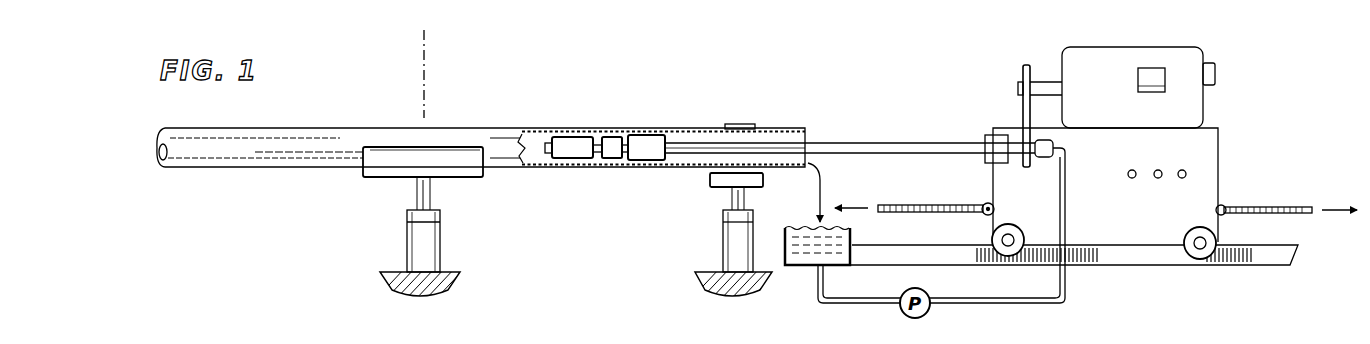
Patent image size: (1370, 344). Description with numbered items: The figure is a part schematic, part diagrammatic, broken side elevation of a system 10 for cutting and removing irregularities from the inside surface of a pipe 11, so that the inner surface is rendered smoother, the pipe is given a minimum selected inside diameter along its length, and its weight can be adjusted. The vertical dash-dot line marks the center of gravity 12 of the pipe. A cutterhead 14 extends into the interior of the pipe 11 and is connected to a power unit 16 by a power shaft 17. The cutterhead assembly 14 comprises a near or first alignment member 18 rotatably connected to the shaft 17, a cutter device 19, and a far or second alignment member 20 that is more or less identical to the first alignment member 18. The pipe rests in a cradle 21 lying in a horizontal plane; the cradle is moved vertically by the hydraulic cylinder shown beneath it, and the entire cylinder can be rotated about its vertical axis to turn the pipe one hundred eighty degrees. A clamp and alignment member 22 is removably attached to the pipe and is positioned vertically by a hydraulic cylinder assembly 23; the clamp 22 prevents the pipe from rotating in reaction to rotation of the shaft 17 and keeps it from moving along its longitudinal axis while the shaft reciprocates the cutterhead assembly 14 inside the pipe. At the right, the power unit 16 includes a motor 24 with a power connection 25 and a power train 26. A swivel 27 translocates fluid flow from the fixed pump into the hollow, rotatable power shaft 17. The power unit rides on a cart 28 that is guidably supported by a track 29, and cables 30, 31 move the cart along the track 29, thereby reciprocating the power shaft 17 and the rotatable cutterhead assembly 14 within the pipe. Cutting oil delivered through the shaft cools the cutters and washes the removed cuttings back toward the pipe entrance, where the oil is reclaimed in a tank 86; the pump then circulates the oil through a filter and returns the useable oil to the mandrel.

The system 10 is at (643, 80).
The pipe 11 is at (484, 126).
The center of gravity 12 is at (424, 106).
The cutterhead 14 is at (676, 123).
The power unit 16 is at (1065, 45).
The power shaft 17 is at (868, 143).
The first alignment member 18 is at (656, 135).
The cutter device 19 is at (617, 135).
The second alignment member 20 is at (580, 135).
The cradle 21 is at (487, 183).
The clamp and alignment member 22 is at (745, 120).
The hydraulic cylinder assembly 23 is at (714, 226).
The motor 24 is at (1203, 48).
The power connection 25 is at (1137, 72).
The power train 26 is at (1022, 113).
The swivel 27 is at (1058, 139).
The cart 28 is at (1224, 168).
The track 29 is at (1157, 250).
The cable 30 is at (955, 190).
The cable 31 is at (1270, 206).
The tank 86 is at (798, 227).